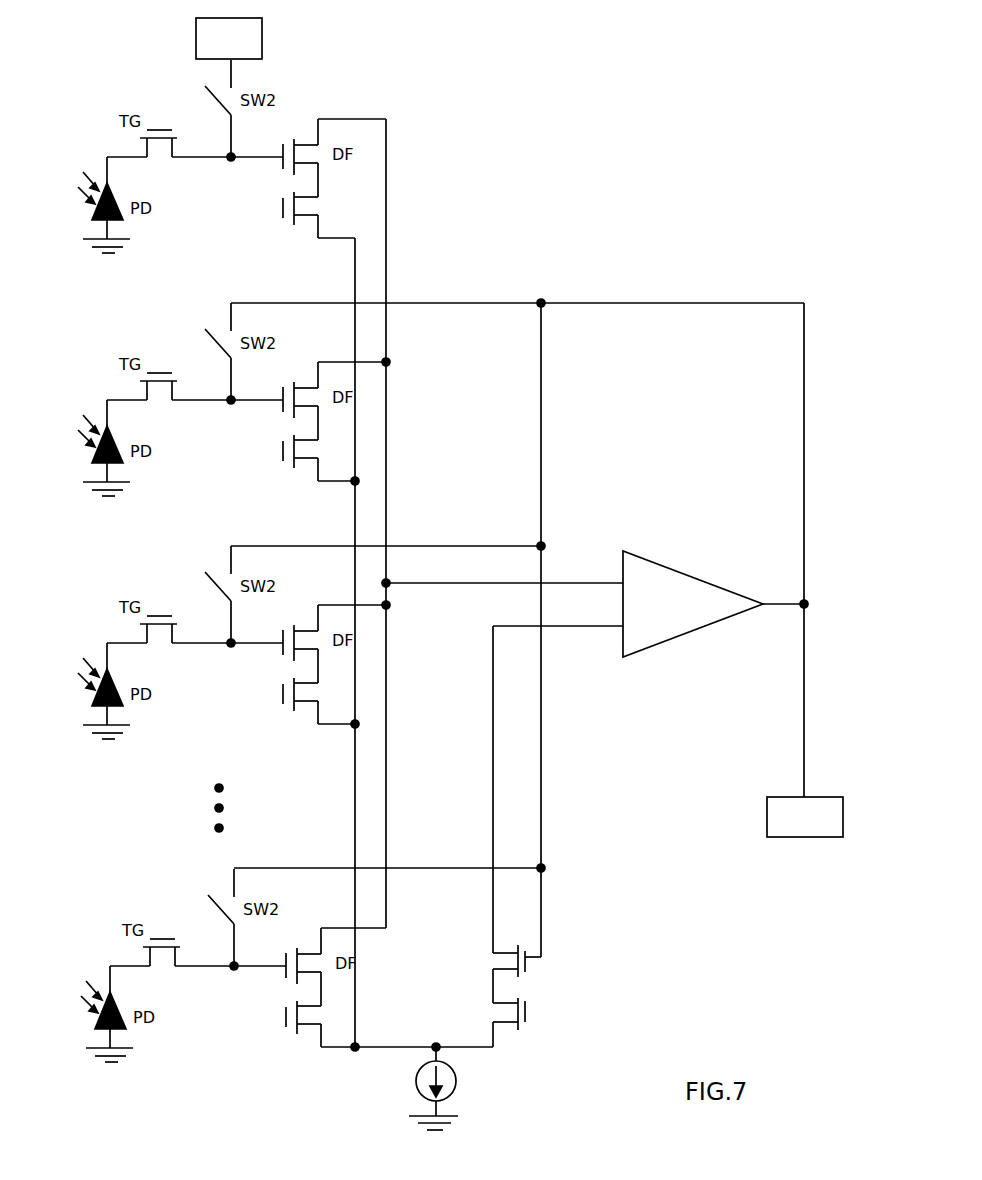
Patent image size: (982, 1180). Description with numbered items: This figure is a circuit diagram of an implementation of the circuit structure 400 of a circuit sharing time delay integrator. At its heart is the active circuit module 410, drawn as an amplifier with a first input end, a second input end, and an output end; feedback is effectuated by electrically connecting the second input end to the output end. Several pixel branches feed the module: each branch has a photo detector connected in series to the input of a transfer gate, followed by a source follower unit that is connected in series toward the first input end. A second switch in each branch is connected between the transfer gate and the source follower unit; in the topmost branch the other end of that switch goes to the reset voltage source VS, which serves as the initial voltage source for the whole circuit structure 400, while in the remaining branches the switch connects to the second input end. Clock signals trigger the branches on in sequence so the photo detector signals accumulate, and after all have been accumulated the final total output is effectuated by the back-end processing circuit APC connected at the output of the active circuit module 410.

The circuit structure 400 is at (718, 44).
The active circuit module 410 is at (693, 604).
The reset voltage source VS is at (229, 38).
The back-end processing circuit APC is at (805, 817).